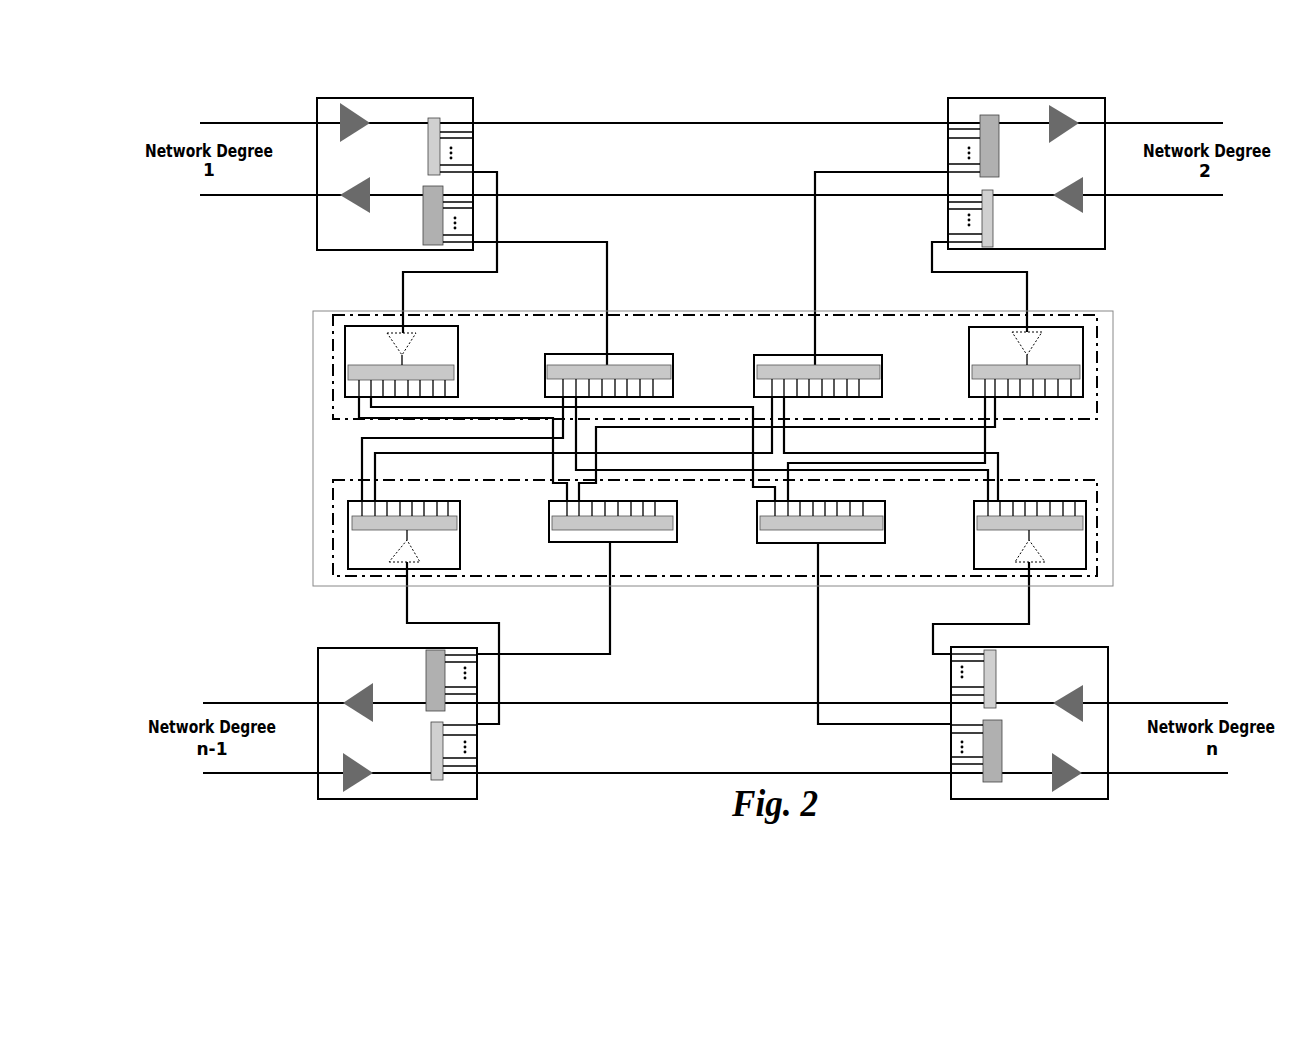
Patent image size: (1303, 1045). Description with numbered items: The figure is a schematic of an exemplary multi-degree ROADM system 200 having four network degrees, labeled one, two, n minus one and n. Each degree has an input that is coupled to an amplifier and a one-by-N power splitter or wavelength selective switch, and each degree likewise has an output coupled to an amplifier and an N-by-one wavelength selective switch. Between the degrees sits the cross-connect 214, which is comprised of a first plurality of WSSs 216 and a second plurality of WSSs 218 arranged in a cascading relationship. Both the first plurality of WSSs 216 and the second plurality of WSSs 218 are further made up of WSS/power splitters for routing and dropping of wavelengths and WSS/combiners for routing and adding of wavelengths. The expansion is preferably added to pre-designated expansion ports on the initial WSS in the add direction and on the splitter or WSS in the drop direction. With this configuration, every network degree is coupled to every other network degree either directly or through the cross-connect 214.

The multi-degree ROADM system 200 is at (863, 79).
The cross-connect 214 is at (1110, 457).
The first plurality of WSSs 216 is at (1098, 407).
The second plurality of WSSs 218 is at (1098, 563).